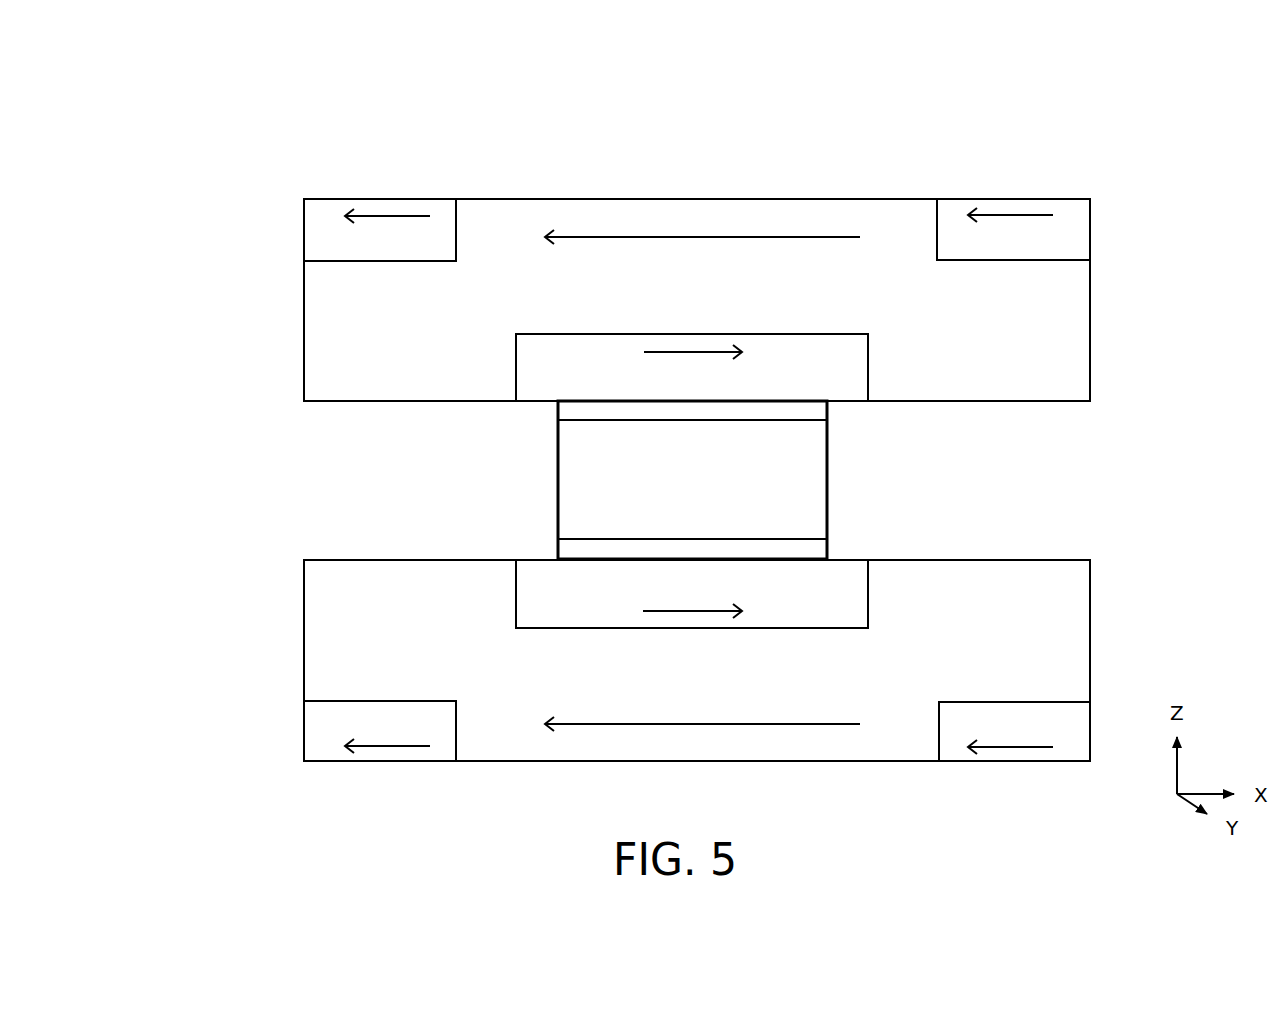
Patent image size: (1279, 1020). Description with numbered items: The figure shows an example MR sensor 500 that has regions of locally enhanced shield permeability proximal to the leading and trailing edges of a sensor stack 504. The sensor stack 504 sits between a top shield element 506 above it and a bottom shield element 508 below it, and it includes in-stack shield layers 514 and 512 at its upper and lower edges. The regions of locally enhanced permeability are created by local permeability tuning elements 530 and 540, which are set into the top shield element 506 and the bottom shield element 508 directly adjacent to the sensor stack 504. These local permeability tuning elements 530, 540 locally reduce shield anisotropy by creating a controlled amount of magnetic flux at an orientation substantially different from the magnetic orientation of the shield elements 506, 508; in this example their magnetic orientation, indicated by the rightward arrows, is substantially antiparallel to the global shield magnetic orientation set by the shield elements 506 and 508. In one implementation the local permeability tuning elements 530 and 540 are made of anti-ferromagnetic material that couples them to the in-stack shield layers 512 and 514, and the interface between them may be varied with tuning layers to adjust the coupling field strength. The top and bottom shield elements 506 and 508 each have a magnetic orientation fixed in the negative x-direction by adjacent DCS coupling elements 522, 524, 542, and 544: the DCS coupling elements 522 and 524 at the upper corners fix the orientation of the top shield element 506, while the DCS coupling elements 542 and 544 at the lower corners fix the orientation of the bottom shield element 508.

The MR sensor 500 is at (205, 130).
The sensor stack 504 is at (712, 491).
The top shield element 506 is at (716, 312).
The bottom shield element 508 is at (718, 686).
The in-stack shield layer 512 is at (558, 547).
The in-stack shield layer 514 is at (558, 419).
The DCS coupling element 522 is at (398, 242).
The DCS coupling element 524 is at (1033, 242).
The local permeability tuning element 530 is at (718, 381).
The local permeability tuning element 540 is at (718, 604).
The DCS coupling element 542 is at (398, 741).
The DCS coupling element 544 is at (1034, 741).